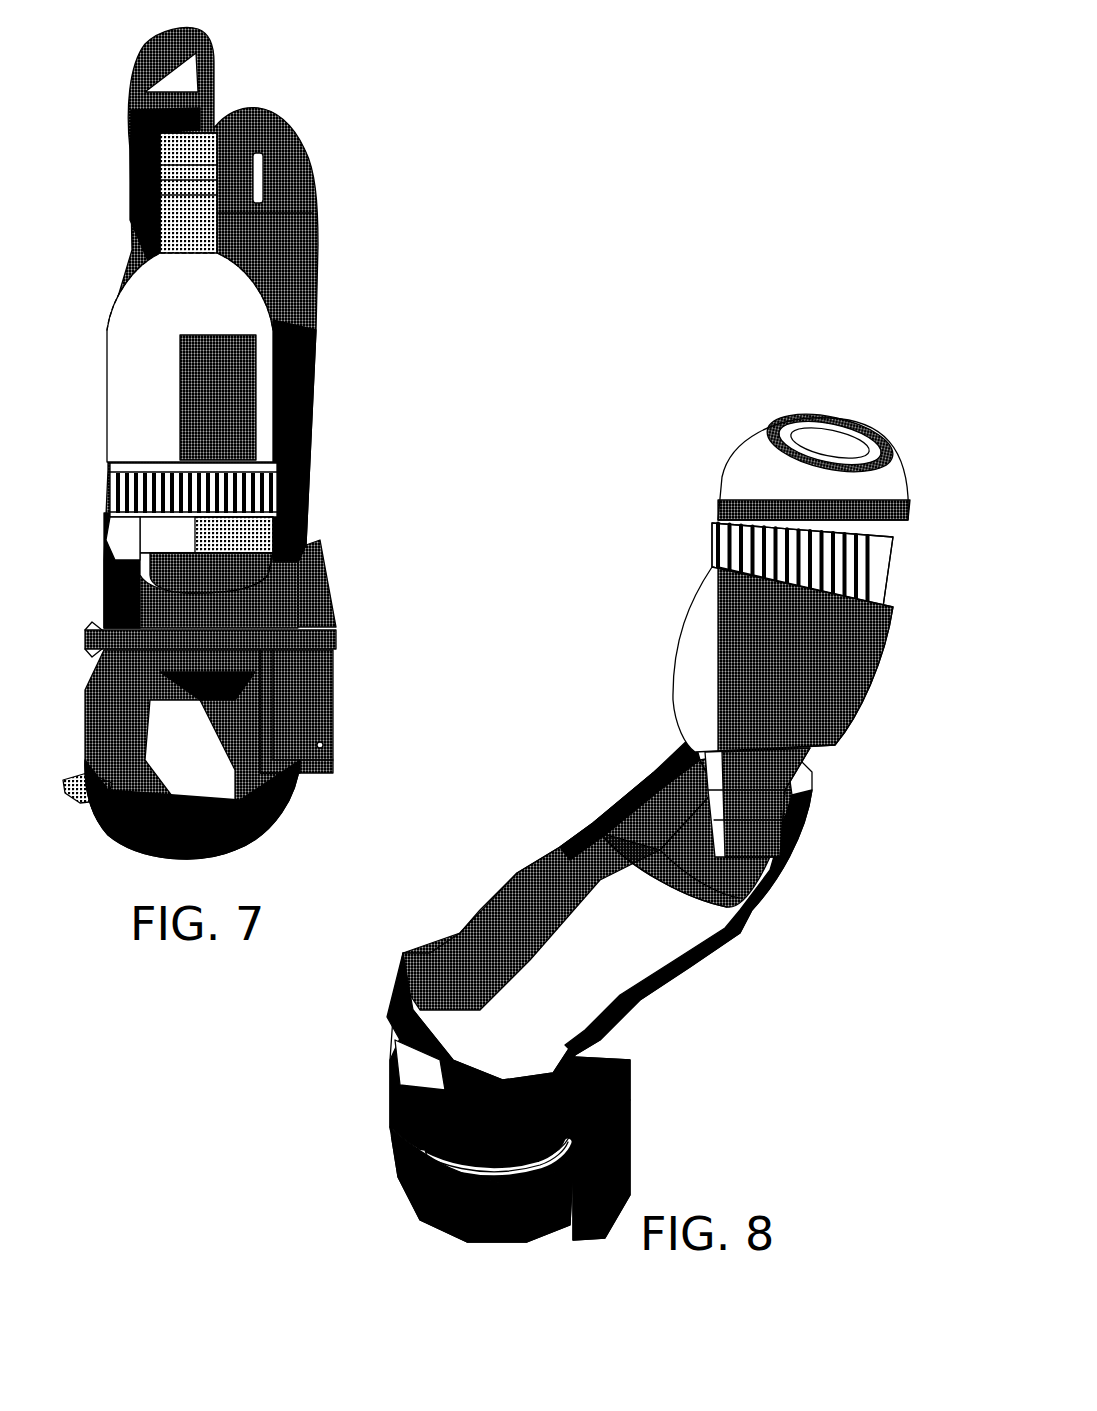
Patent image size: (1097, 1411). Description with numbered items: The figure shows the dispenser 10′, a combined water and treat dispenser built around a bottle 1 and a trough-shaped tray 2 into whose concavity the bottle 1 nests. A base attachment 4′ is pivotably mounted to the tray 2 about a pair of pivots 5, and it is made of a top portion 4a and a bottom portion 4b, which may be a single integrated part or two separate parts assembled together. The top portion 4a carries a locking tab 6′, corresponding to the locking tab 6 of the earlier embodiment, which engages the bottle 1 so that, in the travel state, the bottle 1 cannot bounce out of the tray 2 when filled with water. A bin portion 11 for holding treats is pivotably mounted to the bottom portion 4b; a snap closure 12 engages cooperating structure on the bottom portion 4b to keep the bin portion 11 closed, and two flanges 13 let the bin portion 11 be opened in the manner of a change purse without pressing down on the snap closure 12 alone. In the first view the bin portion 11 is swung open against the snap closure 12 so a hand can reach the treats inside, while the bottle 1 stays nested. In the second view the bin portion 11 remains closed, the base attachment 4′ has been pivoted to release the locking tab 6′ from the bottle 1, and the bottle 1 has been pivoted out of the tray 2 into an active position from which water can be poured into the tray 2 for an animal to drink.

In FIG. 7, the dispenser 10′ is at (322, 114).
In FIG. 8, the dispenser 10′ is at (690, 418).
In FIG. 7, the bottle 1 is at (118, 357).
In FIG. 8, the bottle 1 is at (857, 663).
In FIG. 7, the tray 2 is at (296, 372).
In FIG. 8, the tray 2 is at (558, 870).
In FIG. 7, the base attachment 4′ is at (435, 565).
In FIG. 8, the base attachment 4′ is at (727, 1045).
In FIG. 7, the top portion 4a is at (297, 612).
In FIG. 8, the top portion 4a is at (590, 1090).
In FIG. 7, the bottom portion 4b is at (315, 660).
In FIG. 8, the bottom portion 4b is at (607, 1140).
In FIG. 8, the pivots 5 is at (572, 1050).
In FIG. 8, the locking tab 6 is at (410, 1070).
In FIG. 7, the locking tab 6′ is at (120, 530).
In FIG. 7, the bin portion 11 is at (273, 817).
In FIG. 8, the bin portion 11 is at (427, 1213).
In FIG. 7, the snap closure 12 is at (93, 783).
In FIG. 8, the snap closure 12 is at (405, 1162).
In FIG. 7, the flanges 13 is at (150, 646).
In FIG. 8, the flanges 13 is at (457, 1167).